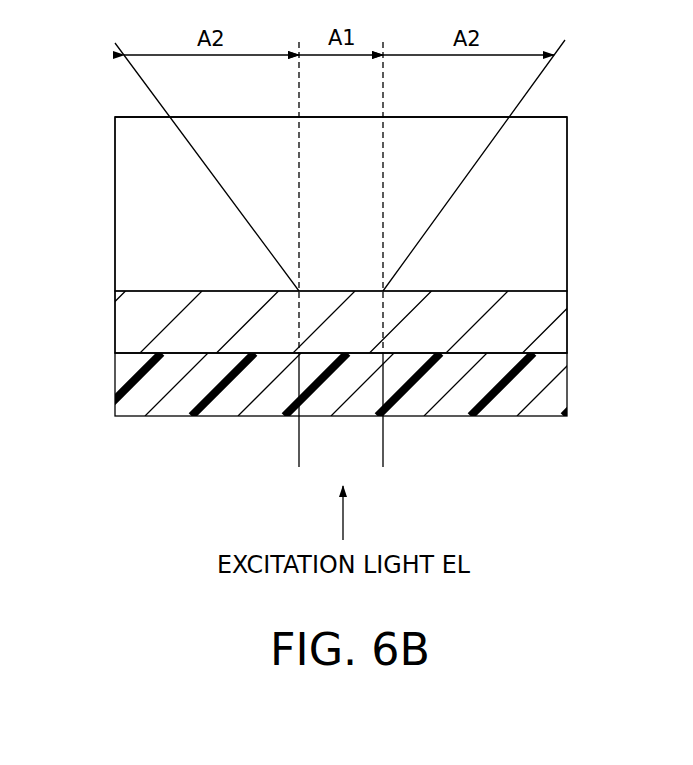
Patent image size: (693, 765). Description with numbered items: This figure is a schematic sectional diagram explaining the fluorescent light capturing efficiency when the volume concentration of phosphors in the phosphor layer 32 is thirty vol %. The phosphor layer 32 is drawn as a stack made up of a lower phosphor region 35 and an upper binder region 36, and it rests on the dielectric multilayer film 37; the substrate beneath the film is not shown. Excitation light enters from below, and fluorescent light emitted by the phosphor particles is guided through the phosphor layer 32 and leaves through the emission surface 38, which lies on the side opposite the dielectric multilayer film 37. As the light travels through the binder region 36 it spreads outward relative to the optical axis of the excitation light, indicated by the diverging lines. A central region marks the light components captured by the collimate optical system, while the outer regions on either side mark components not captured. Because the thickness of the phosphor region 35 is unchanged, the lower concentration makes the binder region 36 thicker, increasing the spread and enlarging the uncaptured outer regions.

The phosphor layer 32 is at (635, 238).
The phosphor region 35 is at (557, 335).
The binder region 36 is at (557, 268).
The dielectric multilayer film 37 is at (557, 396).
The emission surface 38 is at (552, 116).